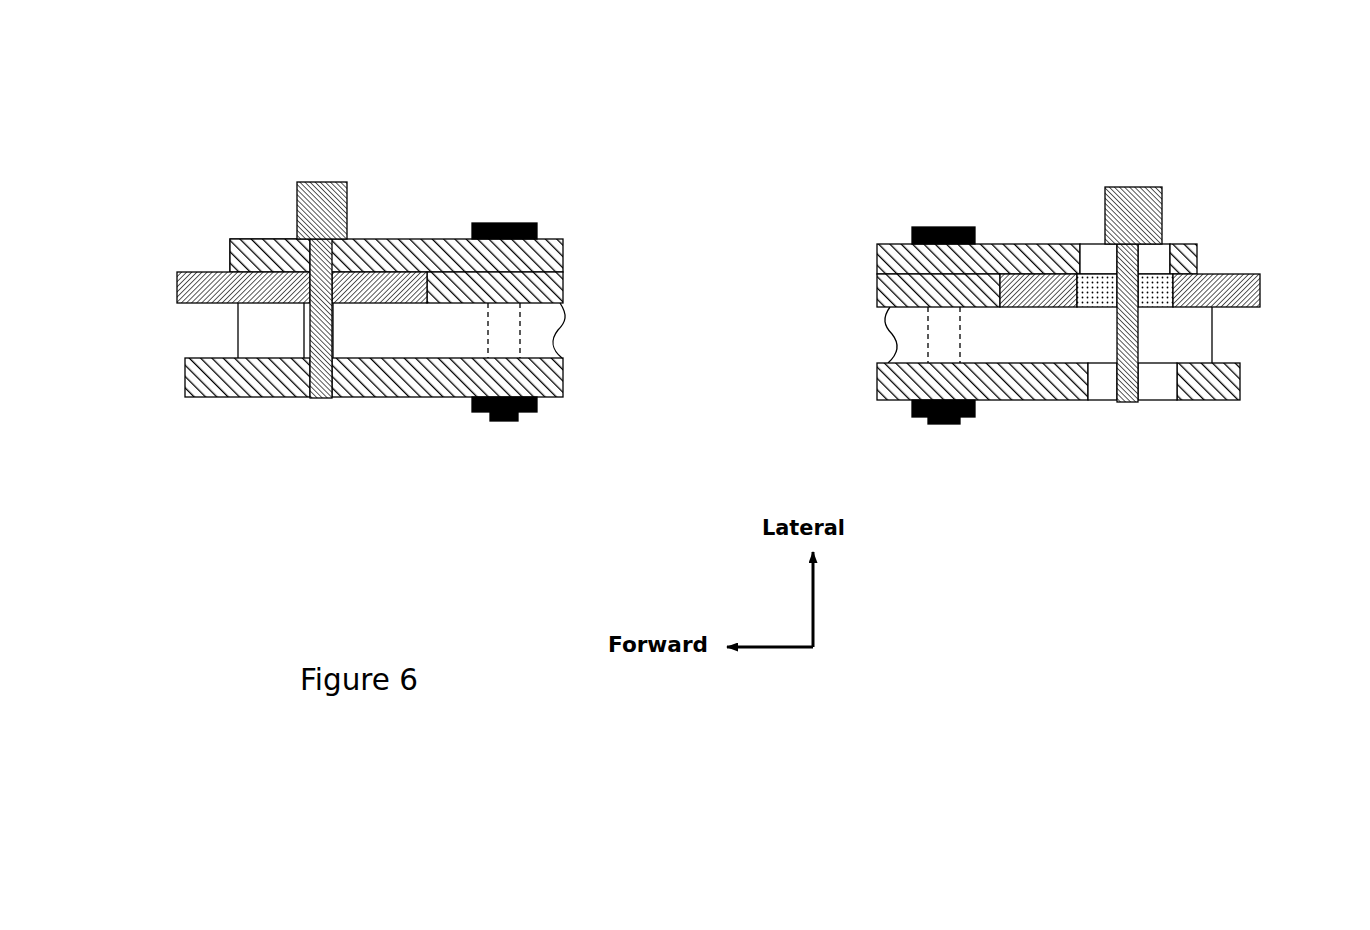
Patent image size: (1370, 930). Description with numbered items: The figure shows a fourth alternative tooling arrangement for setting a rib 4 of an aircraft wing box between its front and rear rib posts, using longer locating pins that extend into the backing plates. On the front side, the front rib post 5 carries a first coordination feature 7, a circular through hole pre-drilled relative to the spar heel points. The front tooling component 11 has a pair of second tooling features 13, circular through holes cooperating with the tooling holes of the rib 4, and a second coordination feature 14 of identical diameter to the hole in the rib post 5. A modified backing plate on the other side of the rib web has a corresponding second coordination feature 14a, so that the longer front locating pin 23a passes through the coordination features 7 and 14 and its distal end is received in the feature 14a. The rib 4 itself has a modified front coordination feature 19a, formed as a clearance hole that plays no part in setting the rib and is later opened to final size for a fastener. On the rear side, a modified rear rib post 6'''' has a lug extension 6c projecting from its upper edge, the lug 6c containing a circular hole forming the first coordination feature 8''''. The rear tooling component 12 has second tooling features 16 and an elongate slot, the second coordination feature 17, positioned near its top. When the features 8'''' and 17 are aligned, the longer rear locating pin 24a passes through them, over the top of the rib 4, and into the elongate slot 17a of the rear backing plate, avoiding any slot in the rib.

The rib 4 is at (577, 337).
The front rib post 5 is at (218, 298).
The lug extension 6c is at (1162, 293).
The modified rear rib post 6'''' is at (1257, 333).
The first coordination feature 7 is at (350, 287).
The first coordination feature 8'''' is at (1195, 271).
The front tooling component 11 is at (270, 252).
The rear tooling component 12 is at (1190, 262).
The second tooling features 13 is at (520, 290).
The second coordination feature 14 is at (307, 257).
The second coordination feature 14a is at (307, 393).
The second tooling features 16 is at (907, 250).
The second coordination feature 17 is at (1097, 257).
The second coordination feature 17a is at (1105, 393).
The modified front coordination feature 19a is at (298, 325).
The modified locating pin 23a is at (323, 178).
The modified locating pin 24a is at (1131, 183).